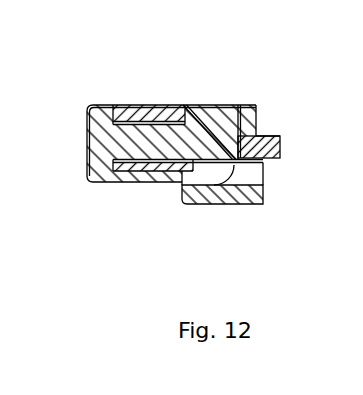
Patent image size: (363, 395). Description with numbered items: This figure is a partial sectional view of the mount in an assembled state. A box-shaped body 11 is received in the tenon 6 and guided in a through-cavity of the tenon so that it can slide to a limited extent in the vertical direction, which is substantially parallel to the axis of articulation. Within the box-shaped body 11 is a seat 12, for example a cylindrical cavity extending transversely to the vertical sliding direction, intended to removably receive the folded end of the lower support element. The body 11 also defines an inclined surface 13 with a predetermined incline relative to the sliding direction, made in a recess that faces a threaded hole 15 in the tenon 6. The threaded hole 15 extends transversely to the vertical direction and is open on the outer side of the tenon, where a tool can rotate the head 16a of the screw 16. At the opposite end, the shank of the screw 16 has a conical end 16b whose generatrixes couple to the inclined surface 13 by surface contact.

The tenon 6 is at (148, 105).
The box-shaped body 11 is at (187, 203).
The seat 12 is at (248, 175).
The inclined surface 13 is at (203, 152).
The threaded hole 15 is at (127, 123).
The screw 16 is at (135, 160).
The head of the screw 16a is at (97, 106).
The conical end of the screw 16b is at (216, 186).